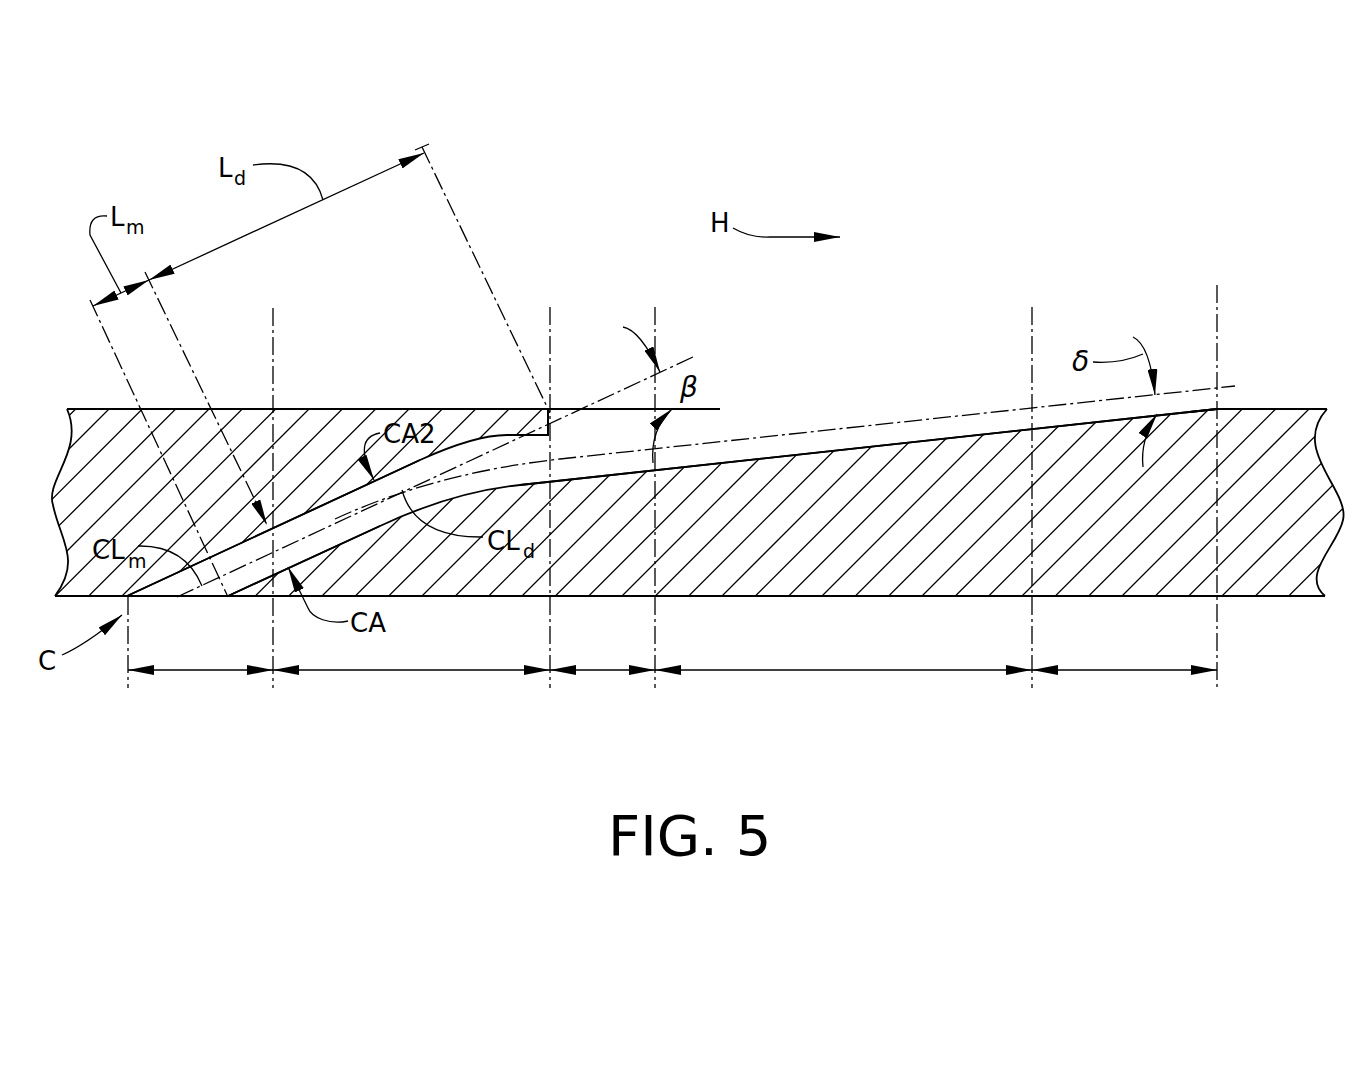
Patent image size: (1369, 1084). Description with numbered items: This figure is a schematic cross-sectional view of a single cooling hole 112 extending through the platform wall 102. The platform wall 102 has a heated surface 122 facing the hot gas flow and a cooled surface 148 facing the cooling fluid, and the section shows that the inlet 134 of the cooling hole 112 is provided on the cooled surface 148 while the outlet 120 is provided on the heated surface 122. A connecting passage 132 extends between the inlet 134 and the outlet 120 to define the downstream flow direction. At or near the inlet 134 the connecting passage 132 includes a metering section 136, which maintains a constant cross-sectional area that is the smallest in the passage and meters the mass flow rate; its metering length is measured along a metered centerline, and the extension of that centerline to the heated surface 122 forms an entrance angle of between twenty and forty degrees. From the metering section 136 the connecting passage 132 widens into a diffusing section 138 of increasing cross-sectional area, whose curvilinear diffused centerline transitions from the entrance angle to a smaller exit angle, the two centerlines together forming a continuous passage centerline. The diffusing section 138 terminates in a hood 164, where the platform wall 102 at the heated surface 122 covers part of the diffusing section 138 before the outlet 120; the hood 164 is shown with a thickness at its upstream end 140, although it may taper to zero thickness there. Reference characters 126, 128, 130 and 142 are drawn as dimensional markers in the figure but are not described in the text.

The platform wall 102 is at (1233, 573).
The cooling hole 112 is at (1008, 268).
The outlet 120 is at (790, 411).
The heated surface 122 is at (410, 409).
The transition length 126 is at (603, 673).
The diffuser length 128 is at (813, 673).
The exit length 130 is at (1048, 673).
The connecting passage 132 is at (327, 515).
The inlet 134 is at (160, 598).
The metering section 136 is at (200, 673).
The diffusing section 138 is at (418, 673).
The upstream end 140 is at (547, 410).
The downstream edge of hole exit 142 is at (1217, 409).
The cooled surface 148 is at (770, 597).
The hood 164 is at (545, 409).